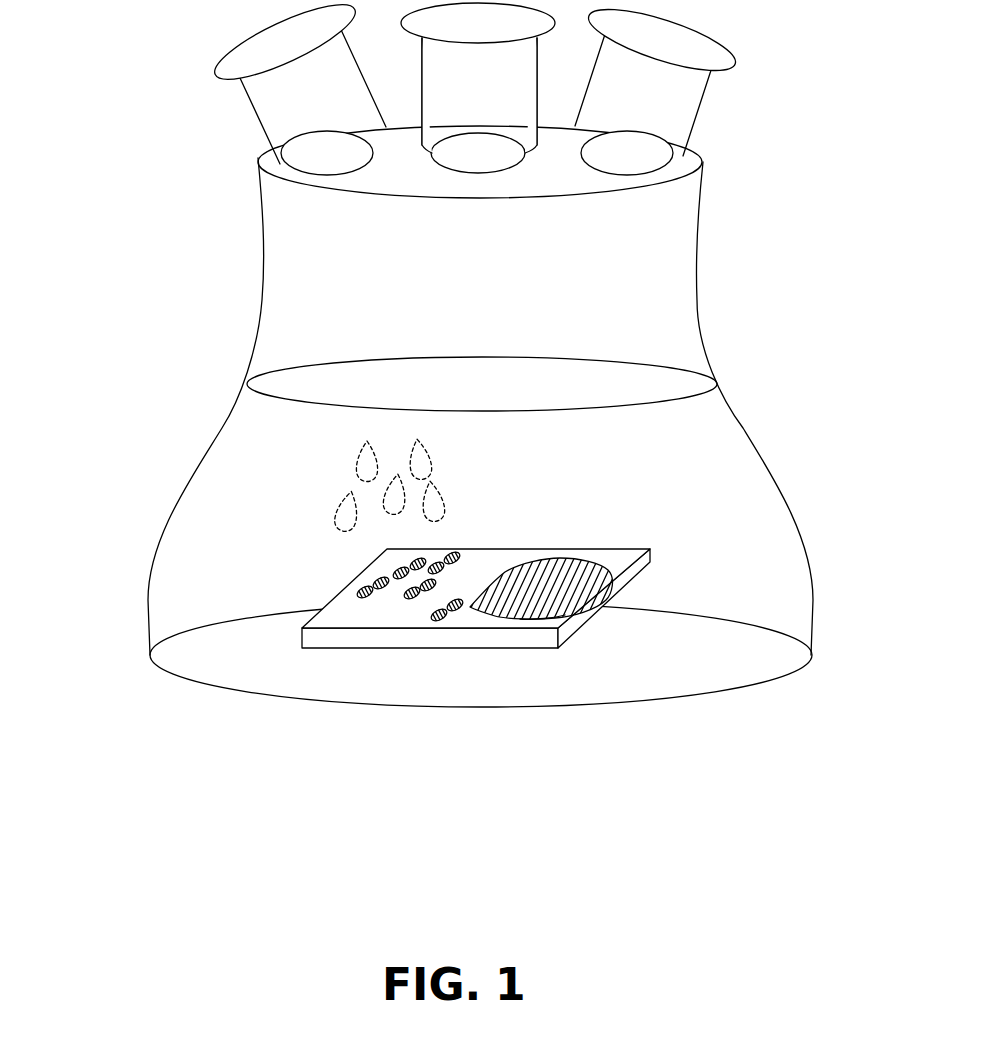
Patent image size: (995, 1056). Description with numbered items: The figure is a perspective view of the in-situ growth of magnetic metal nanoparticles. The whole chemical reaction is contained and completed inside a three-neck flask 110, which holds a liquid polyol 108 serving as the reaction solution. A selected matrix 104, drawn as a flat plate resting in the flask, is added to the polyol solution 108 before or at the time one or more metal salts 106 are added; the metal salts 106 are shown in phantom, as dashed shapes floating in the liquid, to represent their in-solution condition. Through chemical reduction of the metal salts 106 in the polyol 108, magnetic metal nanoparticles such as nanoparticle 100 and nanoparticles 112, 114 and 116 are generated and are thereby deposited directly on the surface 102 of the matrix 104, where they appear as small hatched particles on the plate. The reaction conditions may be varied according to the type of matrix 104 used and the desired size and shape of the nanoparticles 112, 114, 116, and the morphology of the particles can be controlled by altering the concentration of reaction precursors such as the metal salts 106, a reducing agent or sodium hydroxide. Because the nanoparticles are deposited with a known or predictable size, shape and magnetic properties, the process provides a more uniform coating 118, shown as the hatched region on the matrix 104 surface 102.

The nanoparticle 100 is at (370, 598).
The surface 102 is at (475, 570).
The matrix 104 is at (590, 618).
The metal salts 106 is at (343, 522).
The liquid polyol 108 is at (487, 445).
The three-neck flask 110 is at (265, 285).
The nanoparticle 112 is at (403, 580).
The nanoparticle 114 is at (418, 597).
The nanoparticle 116 is at (450, 615).
The coating 118 is at (547, 610).